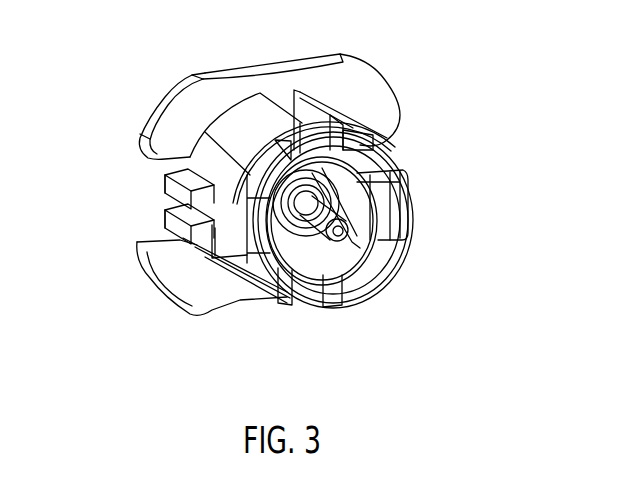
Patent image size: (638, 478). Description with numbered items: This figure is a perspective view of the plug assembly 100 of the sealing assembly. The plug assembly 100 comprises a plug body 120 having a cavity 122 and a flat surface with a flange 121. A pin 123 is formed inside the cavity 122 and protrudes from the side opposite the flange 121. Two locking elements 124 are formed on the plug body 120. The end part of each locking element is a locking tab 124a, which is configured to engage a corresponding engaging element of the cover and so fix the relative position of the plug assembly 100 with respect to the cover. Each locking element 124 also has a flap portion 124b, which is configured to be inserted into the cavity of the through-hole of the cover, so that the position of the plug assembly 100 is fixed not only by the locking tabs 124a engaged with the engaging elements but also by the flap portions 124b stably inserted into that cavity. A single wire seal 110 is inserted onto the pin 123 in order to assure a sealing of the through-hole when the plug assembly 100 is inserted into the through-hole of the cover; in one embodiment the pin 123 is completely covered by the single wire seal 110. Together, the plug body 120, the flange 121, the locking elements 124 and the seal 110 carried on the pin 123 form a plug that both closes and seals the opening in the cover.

The plug assembly 100 is at (480, 67).
The single wire seal 110 is at (327, 305).
The plug body 120 is at (379, 72).
The flange 121 is at (152, 283).
The cavity 122 is at (347, 202).
The pin 123 is at (345, 238).
The locking elements 124 is at (193, 372).
The locking tab 124a is at (155, 193).
The flap portion 124b is at (229, 232).